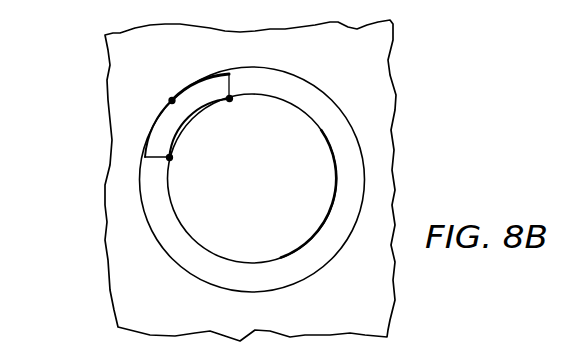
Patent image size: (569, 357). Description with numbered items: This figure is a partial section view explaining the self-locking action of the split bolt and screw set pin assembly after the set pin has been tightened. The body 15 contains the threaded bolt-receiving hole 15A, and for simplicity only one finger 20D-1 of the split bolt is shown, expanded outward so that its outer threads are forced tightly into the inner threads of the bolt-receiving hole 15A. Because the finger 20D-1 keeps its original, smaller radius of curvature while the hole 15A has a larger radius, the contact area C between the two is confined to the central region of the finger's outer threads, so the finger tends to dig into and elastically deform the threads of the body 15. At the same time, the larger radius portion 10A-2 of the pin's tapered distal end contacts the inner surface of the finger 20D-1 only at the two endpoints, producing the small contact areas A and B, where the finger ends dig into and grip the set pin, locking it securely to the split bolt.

The body 15 is at (387, 110).
The bolt-receiving hole 15A is at (315, 90).
The larger radius portion of tapered distal end section 10A-2 is at (277, 225).
The finger 20D-1 is at (206, 82).
The contact area A is at (170, 158).
The contact area B is at (230, 99).
The contact area C is at (172, 100).